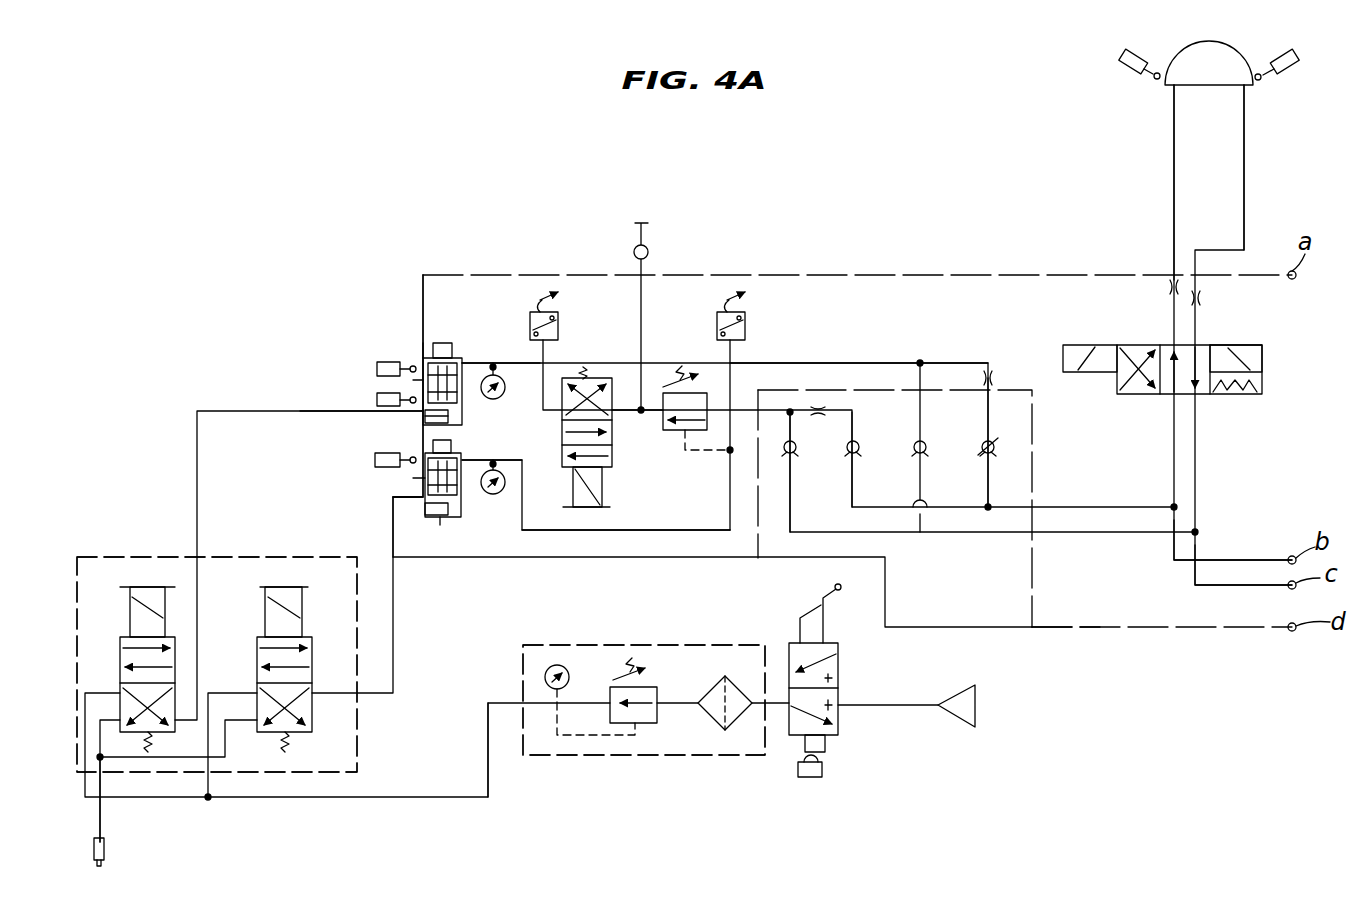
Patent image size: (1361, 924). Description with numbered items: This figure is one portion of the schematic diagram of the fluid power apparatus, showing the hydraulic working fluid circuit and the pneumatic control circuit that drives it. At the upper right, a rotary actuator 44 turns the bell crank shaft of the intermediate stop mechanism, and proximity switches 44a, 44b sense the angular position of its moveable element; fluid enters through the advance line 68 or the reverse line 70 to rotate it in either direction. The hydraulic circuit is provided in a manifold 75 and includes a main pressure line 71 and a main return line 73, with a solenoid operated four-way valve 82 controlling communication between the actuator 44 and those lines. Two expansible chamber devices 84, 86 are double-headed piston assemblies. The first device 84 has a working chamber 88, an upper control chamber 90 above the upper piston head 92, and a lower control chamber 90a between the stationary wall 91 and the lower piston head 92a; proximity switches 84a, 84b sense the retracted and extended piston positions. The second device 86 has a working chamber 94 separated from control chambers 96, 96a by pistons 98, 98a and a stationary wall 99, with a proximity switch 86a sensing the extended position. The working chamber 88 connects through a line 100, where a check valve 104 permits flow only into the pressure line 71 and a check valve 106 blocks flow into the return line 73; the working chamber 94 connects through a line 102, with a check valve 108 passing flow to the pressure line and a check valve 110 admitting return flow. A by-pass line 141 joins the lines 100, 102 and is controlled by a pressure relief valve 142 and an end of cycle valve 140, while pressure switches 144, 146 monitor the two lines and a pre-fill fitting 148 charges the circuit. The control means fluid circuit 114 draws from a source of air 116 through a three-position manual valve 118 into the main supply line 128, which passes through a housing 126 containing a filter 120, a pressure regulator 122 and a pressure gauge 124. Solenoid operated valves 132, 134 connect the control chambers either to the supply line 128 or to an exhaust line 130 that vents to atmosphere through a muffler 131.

The rotary actuator 44 is at (1213, 44).
The proximity switch 44a is at (1128, 72).
The proximity switch 44b is at (1293, 68).
The advance line 68 is at (1244, 158).
The reverse line 70 is at (1174, 160).
The main pressure line 71 is at (1238, 558).
The main return line 73 is at (1222, 588).
The manifold 75 is at (1200, 630).
The solenoid operated four-way valve 82 is at (1155, 396).
The expansible chamber device 84 is at (470, 308).
The proximity switch 84a is at (377, 398).
The proximity switch 84b is at (378, 362).
The expansible chamber device 86 is at (383, 498).
The proximity switch 86a is at (375, 460).
The working chamber 88 is at (462, 360).
The upper control chamber 90 is at (450, 412).
The lower control chamber 90a is at (493, 375).
The stationary wall 91 is at (425, 380).
The upper piston head 92 is at (423, 410).
The lower piston head 92a is at (426, 357).
The working chamber 94 is at (462, 465).
The control chamber 96 is at (425, 515).
The control chamber 96a is at (425, 478).
The piston 98 is at (446, 515).
The piston 98a is at (462, 476).
The stationary wall 99 is at (462, 492).
The line 100 is at (812, 363).
The line 102 is at (620, 530).
The check valve 104 is at (982, 440).
The check valve 106 is at (925, 455).
The check valve 108 is at (860, 440).
The check valve 110 is at (795, 455).
The control means fluid circuit 114 is at (146, 548).
The source of air 116 is at (965, 726).
The manual valve 118 is at (838, 652).
The filter 120 is at (726, 678).
The pressure regulator 122 is at (657, 692).
The pressure gauge 124 is at (557, 665).
The housing 126 is at (681, 645).
The main supply line 128 is at (488, 780).
The exhaust line 130 is at (98, 815).
The muffler 131 is at (108, 846).
The solenoid operated valve 132 is at (120, 657).
The solenoid operated valve 134 is at (312, 650).
The end of cycle valve 140 is at (615, 465).
The by-pass line 141 is at (626, 412).
The pressure relief valve 142 is at (705, 392).
The pressure switch 144 is at (558, 322).
The pressure switch 146 is at (745, 322).
The pre-fill fitting 148 is at (648, 252).